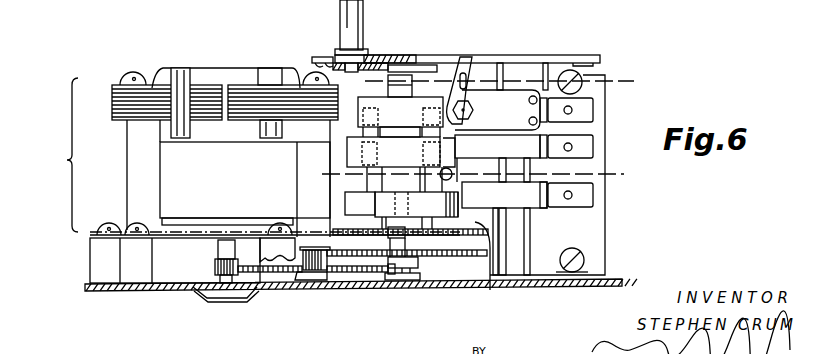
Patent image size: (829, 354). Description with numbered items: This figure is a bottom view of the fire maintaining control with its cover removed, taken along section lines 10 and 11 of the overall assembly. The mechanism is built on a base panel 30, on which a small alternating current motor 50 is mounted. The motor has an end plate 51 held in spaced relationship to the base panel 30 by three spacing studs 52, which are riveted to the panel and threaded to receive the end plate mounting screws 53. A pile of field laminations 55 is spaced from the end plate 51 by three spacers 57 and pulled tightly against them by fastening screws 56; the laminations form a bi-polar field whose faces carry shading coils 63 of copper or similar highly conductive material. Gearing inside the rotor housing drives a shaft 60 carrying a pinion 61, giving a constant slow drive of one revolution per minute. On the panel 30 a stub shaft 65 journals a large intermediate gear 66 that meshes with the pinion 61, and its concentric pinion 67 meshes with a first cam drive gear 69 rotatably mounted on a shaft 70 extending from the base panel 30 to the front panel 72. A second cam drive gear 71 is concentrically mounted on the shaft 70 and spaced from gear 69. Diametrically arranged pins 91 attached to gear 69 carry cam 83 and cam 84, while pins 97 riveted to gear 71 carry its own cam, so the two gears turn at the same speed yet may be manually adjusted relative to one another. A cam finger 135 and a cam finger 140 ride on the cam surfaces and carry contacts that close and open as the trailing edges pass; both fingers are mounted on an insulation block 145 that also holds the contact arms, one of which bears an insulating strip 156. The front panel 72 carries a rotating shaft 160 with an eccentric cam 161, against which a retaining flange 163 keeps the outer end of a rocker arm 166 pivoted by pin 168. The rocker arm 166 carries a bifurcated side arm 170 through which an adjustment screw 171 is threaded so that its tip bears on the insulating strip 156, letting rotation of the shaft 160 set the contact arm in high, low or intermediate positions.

The section line 10- 10 is at (365, 68).
The section line 11- 11 is at (322, 160).
The base panel 30 is at (87, 290).
The motor 50 is at (59, 155).
The end plate 51 is at (90, 238).
The spacing studs 52 is at (127, 267).
The end plate mounting screws 53 is at (132, 224).
The field laminations 55 is at (125, 110).
The fastening screws 56 is at (134, 74).
The spacers 57 is at (135, 163).
The shaft 60 is at (229, 289).
The pinion 61 is at (214, 268).
The shading coils 63 is at (180, 72).
The stub shaft 65 is at (318, 281).
The intermediate gear 66 is at (265, 273).
The concentric pinion 67 is at (300, 268).
The first cam drive gear 69 is at (462, 257).
The shaft 70 is at (408, 281).
The cam drive gear 71 is at (490, 291).
The front panel 72 is at (553, 56).
The cam 83 is at (338, 153).
The cam 84 is at (428, 94).
The pins 91 is at (367, 223).
The pins 97 is at (400, 222).
The cam finger 135 is at (515, 205).
The cam finger 140 is at (480, 150).
The insulation block 145 is at (608, 124).
The insulating strip 156 is at (505, 97).
The rotating shaft 160 is at (356, 15).
The cam 161 is at (378, 56).
The retaining flange 163 is at (323, 57).
The rocker arm 166 is at (452, 63).
The pin 168 is at (590, 68).
The bifurcated side arm 170 is at (476, 77).
The adjustment screw 171 is at (474, 110).